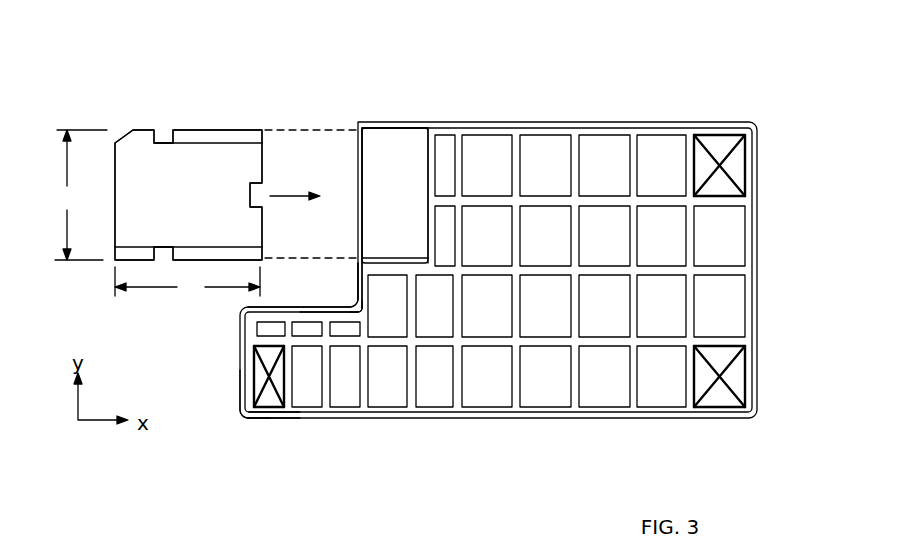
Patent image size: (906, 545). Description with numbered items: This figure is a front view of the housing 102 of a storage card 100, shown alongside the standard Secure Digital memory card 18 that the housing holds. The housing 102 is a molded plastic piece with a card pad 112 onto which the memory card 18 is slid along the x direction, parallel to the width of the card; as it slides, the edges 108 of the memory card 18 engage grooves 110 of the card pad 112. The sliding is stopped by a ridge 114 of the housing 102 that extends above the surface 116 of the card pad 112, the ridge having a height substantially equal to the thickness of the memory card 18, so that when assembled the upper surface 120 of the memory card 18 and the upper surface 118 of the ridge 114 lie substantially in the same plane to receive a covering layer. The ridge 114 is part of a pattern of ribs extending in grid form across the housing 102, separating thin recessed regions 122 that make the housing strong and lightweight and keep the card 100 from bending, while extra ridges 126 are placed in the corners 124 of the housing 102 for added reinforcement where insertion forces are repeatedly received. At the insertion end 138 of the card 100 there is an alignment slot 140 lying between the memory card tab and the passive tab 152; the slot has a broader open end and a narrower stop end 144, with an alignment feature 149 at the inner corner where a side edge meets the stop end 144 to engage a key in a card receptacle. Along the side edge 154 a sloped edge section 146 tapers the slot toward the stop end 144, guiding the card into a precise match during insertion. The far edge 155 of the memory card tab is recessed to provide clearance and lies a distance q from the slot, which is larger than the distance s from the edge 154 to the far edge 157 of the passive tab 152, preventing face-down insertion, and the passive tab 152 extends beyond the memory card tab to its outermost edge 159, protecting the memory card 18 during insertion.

The memory card 18 is at (184, 116).
The storage card 100 is at (610, 58).
The housing 102 is at (757, 178).
The edges of the memory card 108 is at (226, 131).
The grooves 110 is at (383, 128).
The card pad 112 is at (358, 187).
The ridge 114 is at (433, 146).
The surface of the card pad 116 is at (395, 195).
The upper surface of the ridge 118 is at (575, 140).
The upper surface of the memory card 120 is at (188, 195).
The recessed regions 122 is at (435, 399).
The corners of the housing 124 is at (718, 140).
The extra ridges 126 is at (698, 192).
The insertion end 138 is at (77, 288).
The alignment slot 140 is at (303, 285).
The stop end 144 is at (357, 288).
The sloped edge section 146 is at (343, 310).
The alignment feature 149 is at (358, 304).
The passive tab 152 is at (324, 376).
The side edge of the slot 154 is at (290, 330).
The far edge of the memory card tab 155 is at (400, 122).
The far edge of the passive tab 157 is at (277, 418).
The outermost edge of the passive tab 159 is at (237, 384).